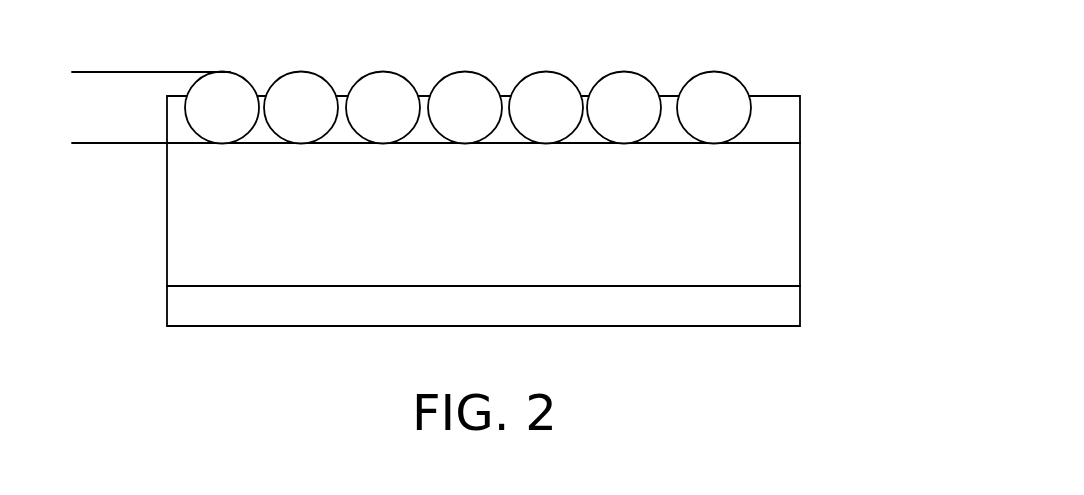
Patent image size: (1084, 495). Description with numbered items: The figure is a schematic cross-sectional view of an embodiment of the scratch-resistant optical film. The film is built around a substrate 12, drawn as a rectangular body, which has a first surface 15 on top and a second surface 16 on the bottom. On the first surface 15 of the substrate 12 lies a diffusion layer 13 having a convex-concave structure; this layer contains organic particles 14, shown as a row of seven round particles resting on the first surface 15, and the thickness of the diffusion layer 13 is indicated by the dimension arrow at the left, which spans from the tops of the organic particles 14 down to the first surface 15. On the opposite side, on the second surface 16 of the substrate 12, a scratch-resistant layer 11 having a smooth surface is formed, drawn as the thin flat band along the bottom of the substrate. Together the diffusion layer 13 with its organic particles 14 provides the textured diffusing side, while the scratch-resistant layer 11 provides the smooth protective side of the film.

The scratch-resistant layer 11 is at (800, 307).
The substrate 12 is at (800, 210).
The diffusion layer 13 is at (91, 72).
The organic particles 14 is at (728, 82).
The first surface 15 is at (800, 143).
The second surface 16 is at (800, 286).